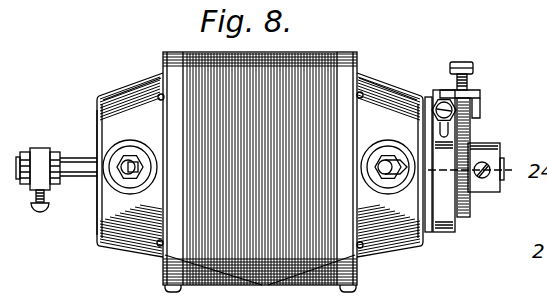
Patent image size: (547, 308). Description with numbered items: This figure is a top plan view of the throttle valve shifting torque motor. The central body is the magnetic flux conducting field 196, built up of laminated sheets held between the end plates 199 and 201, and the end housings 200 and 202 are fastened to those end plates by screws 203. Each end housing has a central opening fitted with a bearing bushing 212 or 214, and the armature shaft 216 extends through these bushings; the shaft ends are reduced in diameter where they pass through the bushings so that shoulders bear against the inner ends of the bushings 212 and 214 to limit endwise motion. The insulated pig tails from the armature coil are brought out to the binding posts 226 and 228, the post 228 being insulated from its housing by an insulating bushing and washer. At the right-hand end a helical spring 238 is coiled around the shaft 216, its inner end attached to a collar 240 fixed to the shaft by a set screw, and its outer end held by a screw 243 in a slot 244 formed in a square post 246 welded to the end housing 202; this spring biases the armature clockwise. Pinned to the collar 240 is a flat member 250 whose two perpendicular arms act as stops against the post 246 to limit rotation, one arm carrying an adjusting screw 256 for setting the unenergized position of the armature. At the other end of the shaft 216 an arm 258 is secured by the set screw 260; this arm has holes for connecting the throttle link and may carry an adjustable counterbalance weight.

The magnetic flux conducting field 196 is at (256, 54).
The end plate 199 is at (170, 289).
The end housing 200 is at (100, 246).
The end plate 201 is at (352, 289).
The end housing 202 is at (402, 252).
The screws 203 is at (259, 287).
The bearing bushing 212 is at (90, 153).
The bearing bushing 214 is at (430, 183).
The armature shaft 216 is at (73, 174).
The binding post 226 is at (130, 163).
The binding post 228 is at (389, 163).
The helical spring 238 is at (466, 128).
The collar 240 is at (490, 147).
The screw 243 is at (456, 62).
The slot 244 is at (453, 96).
The square post 246 is at (477, 100).
The flat member 250 is at (447, 222).
The screw 256 is at (437, 97).
The arm 258 is at (43, 147).
The set screw 260 is at (47, 207).